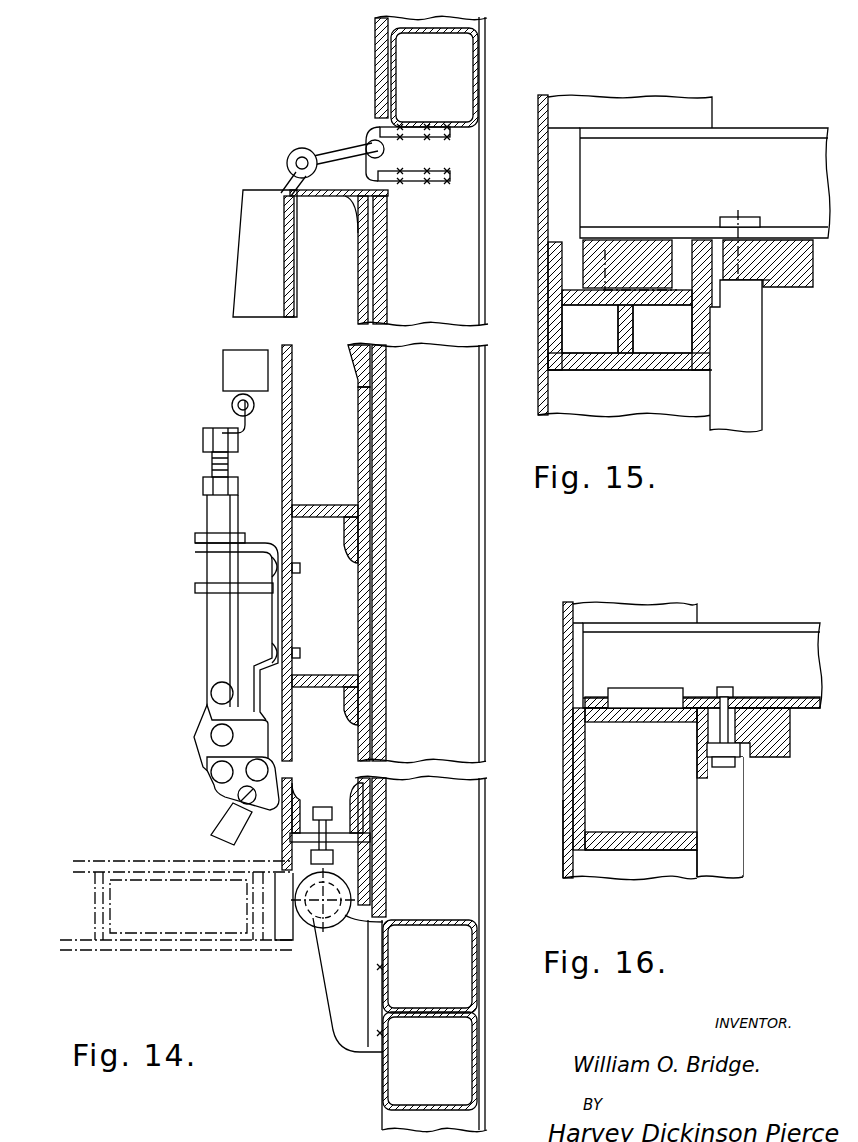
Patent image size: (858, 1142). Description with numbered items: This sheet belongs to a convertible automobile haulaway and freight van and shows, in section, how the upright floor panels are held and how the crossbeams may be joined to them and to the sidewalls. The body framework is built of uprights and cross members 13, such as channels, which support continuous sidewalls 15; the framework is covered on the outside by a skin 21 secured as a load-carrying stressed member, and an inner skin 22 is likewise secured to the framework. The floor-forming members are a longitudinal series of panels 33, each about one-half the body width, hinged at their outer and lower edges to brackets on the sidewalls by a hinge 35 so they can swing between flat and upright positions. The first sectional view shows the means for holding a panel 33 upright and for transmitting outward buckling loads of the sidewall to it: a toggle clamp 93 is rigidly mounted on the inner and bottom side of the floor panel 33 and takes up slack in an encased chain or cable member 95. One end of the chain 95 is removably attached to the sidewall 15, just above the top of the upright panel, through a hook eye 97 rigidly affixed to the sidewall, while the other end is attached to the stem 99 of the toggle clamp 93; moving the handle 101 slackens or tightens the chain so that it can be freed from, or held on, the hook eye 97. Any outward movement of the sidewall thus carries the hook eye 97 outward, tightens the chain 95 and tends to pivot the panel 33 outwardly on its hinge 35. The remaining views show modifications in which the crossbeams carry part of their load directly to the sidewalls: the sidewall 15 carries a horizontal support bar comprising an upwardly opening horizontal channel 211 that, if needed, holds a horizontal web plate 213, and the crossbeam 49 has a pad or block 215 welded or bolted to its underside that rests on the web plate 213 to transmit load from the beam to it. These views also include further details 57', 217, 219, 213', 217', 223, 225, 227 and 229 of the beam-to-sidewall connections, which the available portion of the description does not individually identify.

In FIG. 15, the uprights and cross members 13 is at (645, 107).
In FIG. 16, the uprights and cross members 13 is at (660, 862).
In FIG. 14, the sidewalls 15 is at (462, 543).
In FIG. 15, the sidewalls 15 is at (540, 276).
In FIG. 16, the sidewalls 15 is at (562, 743).
In FIG. 14, the skin 21 is at (487, 1041).
In FIG. 15, the skin 21 is at (539, 224).
In FIG. 16, the skin 21 is at (566, 840).
In FIG. 14, the inner skin 22 is at (375, 62).
In FIG. 14, the floor panels 33 is at (293, 428).
In FIG. 15, the floor panels 33 is at (755, 373).
In FIG. 16, the floor panels 33 is at (740, 836).
In FIG. 14, the hinge 35 is at (311, 918).
In FIG. 15, the crossbeam 49 is at (745, 150).
In FIG. 16, the crossbeam 49 is at (727, 632).
In FIG. 15, the bolt 57' is at (759, 234).
In FIG. 14, the toggle clamp 93 is at (197, 731).
In FIG. 14, the encased chain or cable member 95 is at (289, 167).
In FIG. 14, the hook eye 97 is at (375, 136).
In FIG. 14, the stem 99 is at (211, 465).
In FIG. 14, the handle 101 is at (222, 815).
In FIG. 15, the horizontal channel 211 is at (637, 370).
In FIG. 15, the horizontal web plate 213 is at (627, 321).
In FIG. 16, the spacer bar 213' is at (638, 882).
In FIG. 15, the pad or block 215 is at (665, 257).
In FIG. 15, the block 217 is at (773, 247).
In FIG. 16, the block 217' is at (791, 736).
In FIG. 15, the shoulder 219 is at (770, 285).
In FIG. 16, the plate 223 is at (628, 696).
In FIG. 16, the bolt 225 is at (710, 692).
In FIG. 16, the clamp bar 227 is at (748, 701).
In FIG. 15, the pin 229 is at (610, 256).